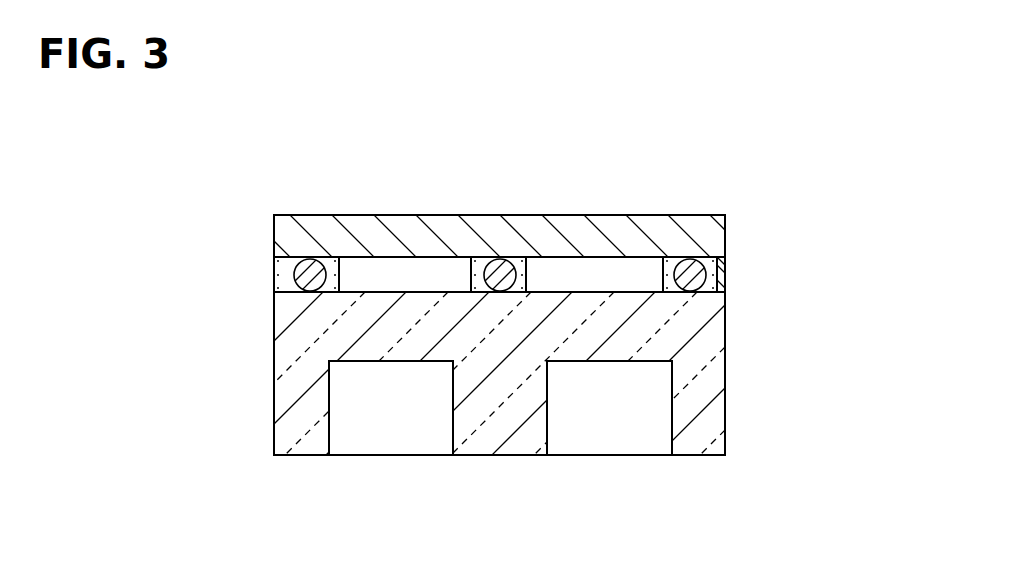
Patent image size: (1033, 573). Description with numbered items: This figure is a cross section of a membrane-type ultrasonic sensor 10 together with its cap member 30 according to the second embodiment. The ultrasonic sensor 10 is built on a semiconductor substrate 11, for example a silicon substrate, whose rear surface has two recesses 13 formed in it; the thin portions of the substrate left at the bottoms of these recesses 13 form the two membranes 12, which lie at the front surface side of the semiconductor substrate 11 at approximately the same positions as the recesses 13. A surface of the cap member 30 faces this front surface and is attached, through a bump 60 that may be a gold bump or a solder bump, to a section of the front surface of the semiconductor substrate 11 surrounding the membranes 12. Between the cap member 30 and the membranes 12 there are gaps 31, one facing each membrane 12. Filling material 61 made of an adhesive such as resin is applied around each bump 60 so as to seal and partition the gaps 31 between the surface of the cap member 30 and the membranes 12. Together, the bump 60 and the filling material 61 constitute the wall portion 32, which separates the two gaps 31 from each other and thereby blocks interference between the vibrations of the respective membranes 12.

The ultrasonic sensor 10 is at (730, 338).
The semiconductor substrate 11 is at (712, 378).
The membranes 12 is at (413, 343).
The recesses 13 is at (329, 402).
The cap member 30 is at (588, 234).
The gaps 31 is at (393, 270).
The wall portion 32 is at (428, 138).
The bump 60 is at (499, 260).
The filling material 61 is at (473, 264).